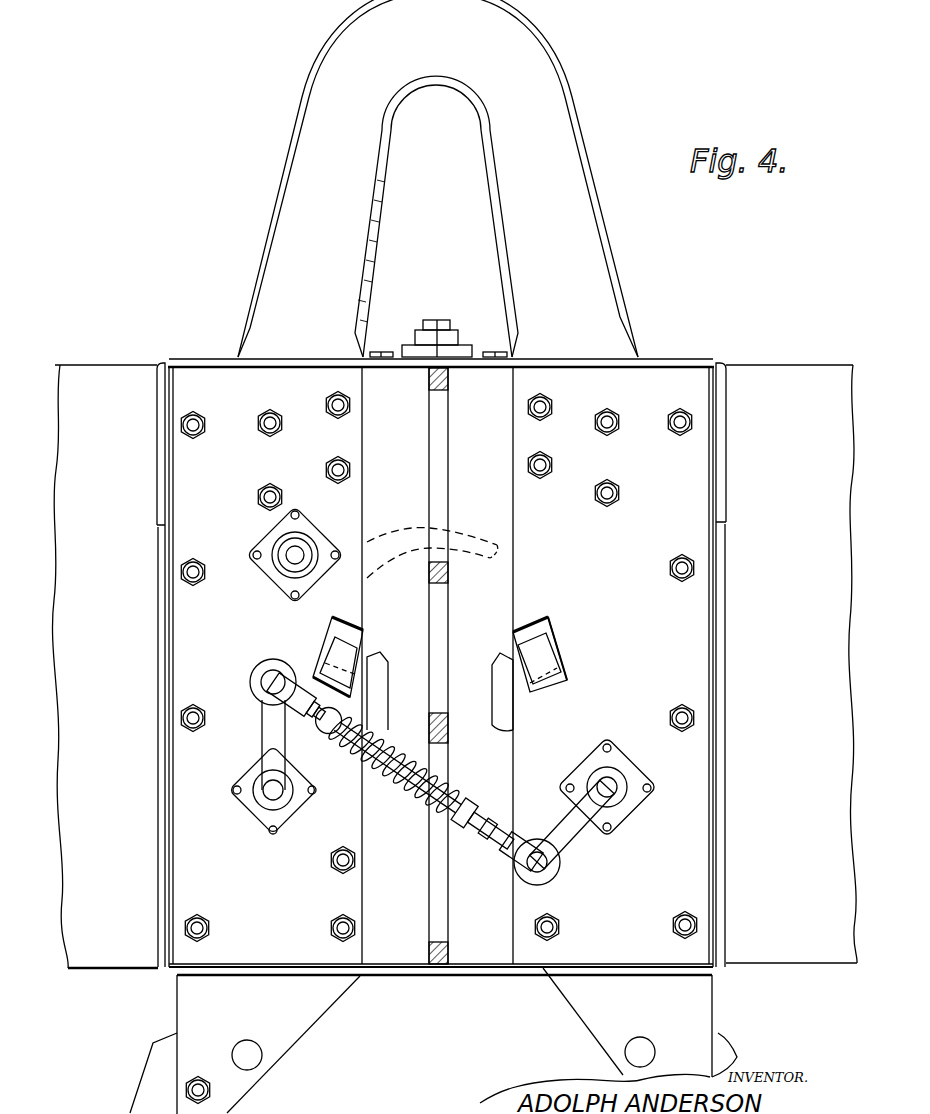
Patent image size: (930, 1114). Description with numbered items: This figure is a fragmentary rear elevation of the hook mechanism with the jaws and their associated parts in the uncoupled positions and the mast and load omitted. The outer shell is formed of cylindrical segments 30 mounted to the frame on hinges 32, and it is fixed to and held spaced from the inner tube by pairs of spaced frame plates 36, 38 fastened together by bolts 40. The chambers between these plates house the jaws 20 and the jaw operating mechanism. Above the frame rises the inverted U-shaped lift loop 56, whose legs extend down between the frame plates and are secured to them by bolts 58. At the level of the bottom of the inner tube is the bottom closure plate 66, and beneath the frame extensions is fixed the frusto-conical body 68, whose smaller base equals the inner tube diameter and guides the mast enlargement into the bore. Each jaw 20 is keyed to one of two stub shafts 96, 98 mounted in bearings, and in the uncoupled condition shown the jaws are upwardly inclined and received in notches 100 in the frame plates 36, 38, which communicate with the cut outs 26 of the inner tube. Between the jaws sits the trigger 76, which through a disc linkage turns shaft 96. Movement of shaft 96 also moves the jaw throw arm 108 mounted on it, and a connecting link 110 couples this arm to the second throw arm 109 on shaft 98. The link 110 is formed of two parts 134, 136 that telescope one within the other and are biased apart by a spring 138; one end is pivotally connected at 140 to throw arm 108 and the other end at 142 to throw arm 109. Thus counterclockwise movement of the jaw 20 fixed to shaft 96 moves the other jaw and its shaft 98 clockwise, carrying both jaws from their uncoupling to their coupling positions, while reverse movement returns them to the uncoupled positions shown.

The jaw 20 is at (352, 657).
The cut out 26 is at (493, 693).
The cylindrical segment 30 is at (104, 545).
The hinge 32 is at (163, 975).
The frame plate 36 is at (352, 507).
The frame plate 38 is at (530, 570).
The bolt 40 is at (203, 582).
The lift loop 56 is at (488, 203).
The bolt 58 is at (553, 463).
The bottom closure plate 66 is at (541, 967).
The frusto-conical body 68 is at (390, 1092).
The trigger 76 is at (457, 532).
The stub shaft 96 is at (265, 798).
The stub shaft 98 is at (613, 792).
The notch 100 is at (548, 627).
The jaw throw arm 108 is at (262, 731).
The jaw throw arm 109 is at (572, 843).
The connecting link 110 is at (476, 836).
The link part 134 is at (468, 786).
The link part 136 is at (480, 820).
The spring 138 is at (417, 812).
The pivotal connection 140 is at (275, 677).
The pivotal connection 142 is at (534, 866).